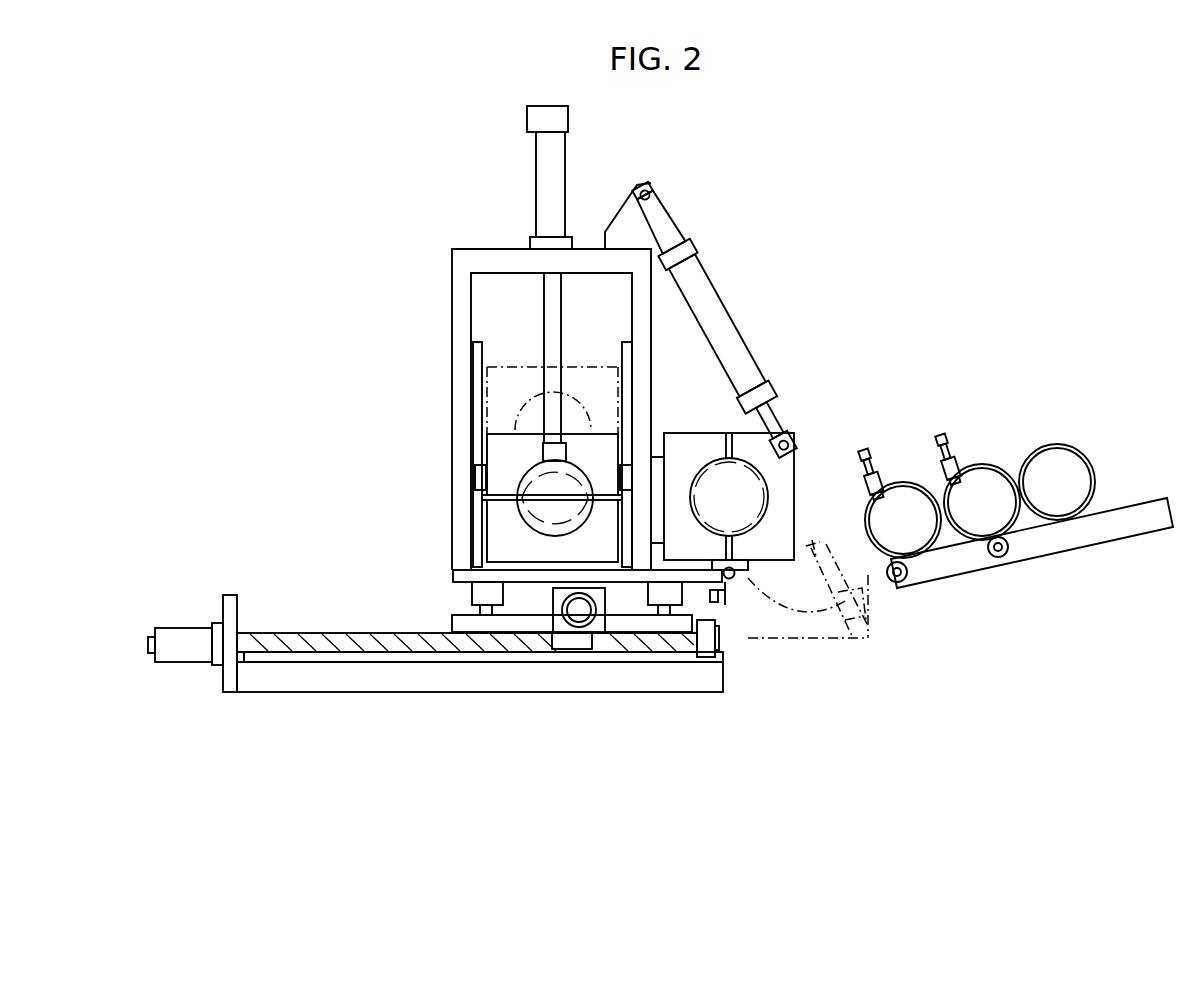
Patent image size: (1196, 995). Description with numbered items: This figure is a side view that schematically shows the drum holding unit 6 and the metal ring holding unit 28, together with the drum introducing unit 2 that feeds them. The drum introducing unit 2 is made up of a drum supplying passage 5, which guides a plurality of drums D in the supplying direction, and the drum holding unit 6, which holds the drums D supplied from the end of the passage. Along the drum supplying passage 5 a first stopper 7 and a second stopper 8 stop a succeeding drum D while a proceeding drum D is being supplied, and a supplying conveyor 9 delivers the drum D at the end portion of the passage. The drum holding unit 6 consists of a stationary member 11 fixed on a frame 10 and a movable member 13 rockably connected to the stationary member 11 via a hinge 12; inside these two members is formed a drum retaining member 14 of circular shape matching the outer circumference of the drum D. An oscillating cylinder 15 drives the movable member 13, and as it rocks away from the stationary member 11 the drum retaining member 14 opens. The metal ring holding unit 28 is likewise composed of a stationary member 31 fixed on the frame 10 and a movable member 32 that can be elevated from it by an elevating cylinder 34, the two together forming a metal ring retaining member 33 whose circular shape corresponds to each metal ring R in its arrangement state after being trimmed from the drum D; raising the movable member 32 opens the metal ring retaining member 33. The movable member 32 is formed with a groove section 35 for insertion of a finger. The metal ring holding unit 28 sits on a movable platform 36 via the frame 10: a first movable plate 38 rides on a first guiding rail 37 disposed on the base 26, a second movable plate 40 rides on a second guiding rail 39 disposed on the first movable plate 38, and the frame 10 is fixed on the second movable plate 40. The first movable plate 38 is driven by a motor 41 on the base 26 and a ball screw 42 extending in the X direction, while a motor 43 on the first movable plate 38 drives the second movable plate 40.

The drum introducing unit 2 is at (1010, 381).
The drum supplying passage 5 is at (1136, 497).
The drum holding unit 6 is at (795, 336).
The first stopper 7 is at (858, 482).
The second stopper 8 is at (935, 474).
The supplying conveyor 9 is at (945, 600).
The frame 10 is at (452, 250).
The stationary member 11 is at (682, 433).
The hinge 12 is at (735, 580).
The movable member 13 is at (795, 476).
The drum retaining member 14 is at (713, 472).
The oscillating cylinder 15 is at (705, 268).
The base 26 is at (340, 692).
The metal ring holding unit 28 is at (424, 400).
The stationary member 31 is at (500, 547).
The movable member 32 is at (505, 451).
The metal ring retaining member 33 is at (540, 481).
The elevating cylinder 34 is at (537, 160).
The groove section 35 is at (543, 452).
The movable platform 36 is at (430, 594).
The first guiding rail 37 is at (398, 662).
The first movable plate 38 is at (468, 606).
The second guiding rail 39 is at (492, 616).
The second movable plate 40 is at (540, 590).
The motor 41 is at (183, 662).
The ball screw 42 is at (285, 652).
The motor 43 is at (603, 634).
The drum D is at (895, 482).
The metal ring R is at (520, 527).
The X direction X is at (283, 615).